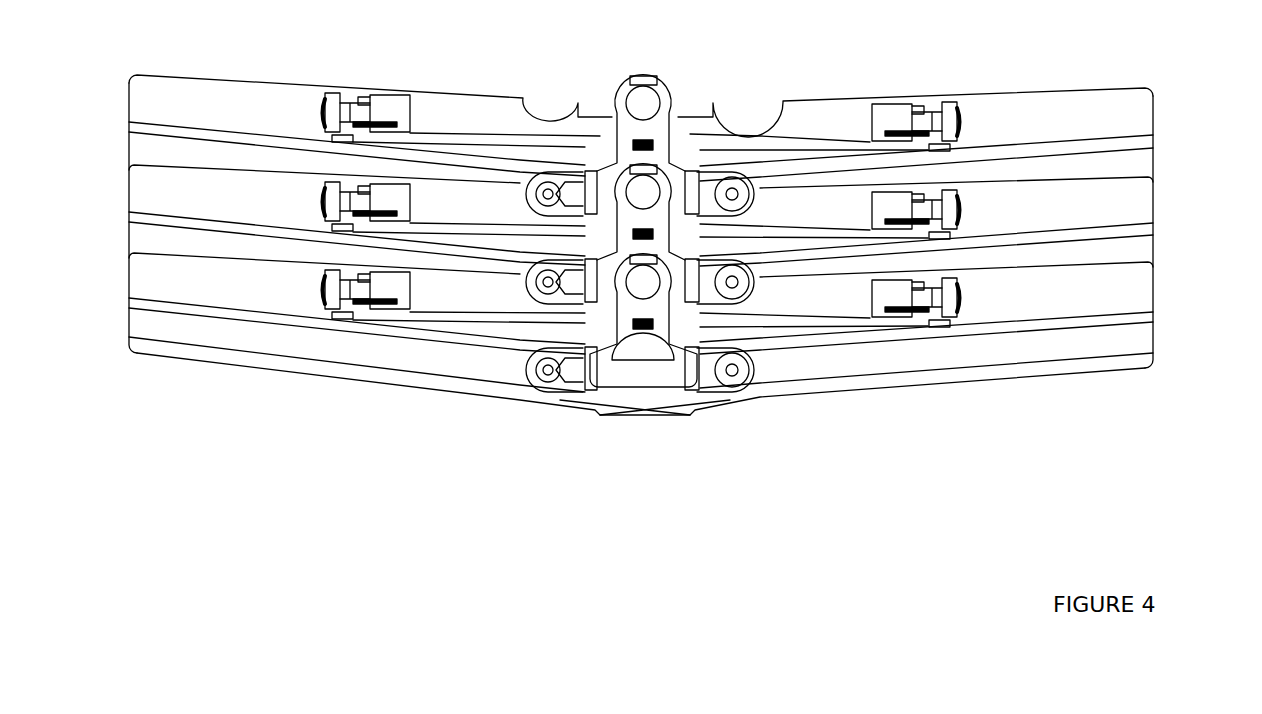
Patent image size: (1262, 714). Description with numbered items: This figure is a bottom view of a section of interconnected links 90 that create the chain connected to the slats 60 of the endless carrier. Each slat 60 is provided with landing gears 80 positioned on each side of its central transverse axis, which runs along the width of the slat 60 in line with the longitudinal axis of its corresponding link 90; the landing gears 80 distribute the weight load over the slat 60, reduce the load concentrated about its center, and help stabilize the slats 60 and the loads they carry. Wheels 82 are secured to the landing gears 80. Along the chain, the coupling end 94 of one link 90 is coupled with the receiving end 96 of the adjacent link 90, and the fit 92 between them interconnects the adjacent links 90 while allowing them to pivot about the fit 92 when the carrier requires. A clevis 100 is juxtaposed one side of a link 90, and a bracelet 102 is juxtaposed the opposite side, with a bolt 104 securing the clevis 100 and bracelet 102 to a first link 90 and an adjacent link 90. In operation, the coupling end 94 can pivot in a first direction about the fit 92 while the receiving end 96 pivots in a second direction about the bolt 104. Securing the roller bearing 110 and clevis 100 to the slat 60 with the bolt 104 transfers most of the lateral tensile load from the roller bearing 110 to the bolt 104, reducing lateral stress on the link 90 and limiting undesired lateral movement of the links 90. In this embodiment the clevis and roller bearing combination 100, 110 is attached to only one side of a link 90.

The slat 60 is at (1158, 98).
The landing gear 80 is at (387, 290).
The wheel 82 is at (948, 111).
The link 90 is at (662, 90).
The fit 92 is at (547, 345).
The coupling end 94 is at (692, 340).
The receiving end 96 is at (598, 176).
The clevis 100 is at (722, 170).
The bracelet 102 is at (546, 180).
The bolt 104 is at (650, 378).
The roller bearing 110 is at (746, 366).